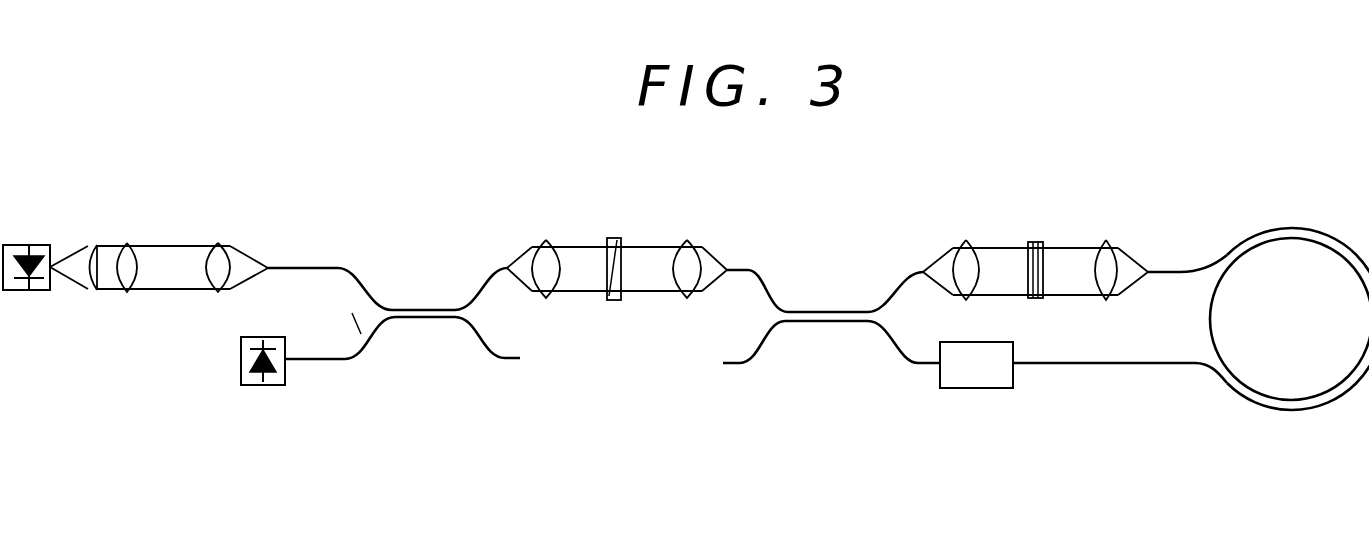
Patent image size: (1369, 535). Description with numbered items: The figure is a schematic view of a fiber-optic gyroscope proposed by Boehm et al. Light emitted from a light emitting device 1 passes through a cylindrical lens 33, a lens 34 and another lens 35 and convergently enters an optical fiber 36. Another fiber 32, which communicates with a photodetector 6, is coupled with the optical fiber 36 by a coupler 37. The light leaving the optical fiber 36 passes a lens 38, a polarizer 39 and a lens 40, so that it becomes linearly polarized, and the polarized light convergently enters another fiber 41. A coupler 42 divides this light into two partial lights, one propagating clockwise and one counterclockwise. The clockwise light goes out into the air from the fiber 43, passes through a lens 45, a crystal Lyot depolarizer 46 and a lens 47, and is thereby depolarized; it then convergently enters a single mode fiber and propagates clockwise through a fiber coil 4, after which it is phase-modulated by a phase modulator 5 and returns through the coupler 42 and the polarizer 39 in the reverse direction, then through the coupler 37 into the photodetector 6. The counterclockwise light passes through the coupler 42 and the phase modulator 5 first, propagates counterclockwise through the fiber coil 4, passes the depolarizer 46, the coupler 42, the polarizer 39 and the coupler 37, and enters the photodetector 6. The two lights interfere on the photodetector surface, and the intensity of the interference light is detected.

The light emitting device 1 is at (43, 291).
The fiber coil 4 is at (1266, 232).
The phase modulator 5 is at (984, 380).
The photodetector 6 is at (260, 386).
The fiber 32 is at (351, 359).
The cylindrical lens 33 is at (93, 291).
The lens 34 is at (129, 278).
The lens 35 is at (223, 280).
The optical fiber 36 is at (345, 268).
The coupler 37 is at (426, 310).
The lens 38 is at (552, 283).
The polarizer 39 is at (613, 300).
The lens 40 is at (684, 283).
The fiber 41 is at (763, 292).
The coupler 42 is at (834, 322).
The fiber 43 is at (922, 272).
The lens 45 is at (964, 270).
The depolarizer 46 is at (1043, 258).
The lens 47 is at (1110, 268).